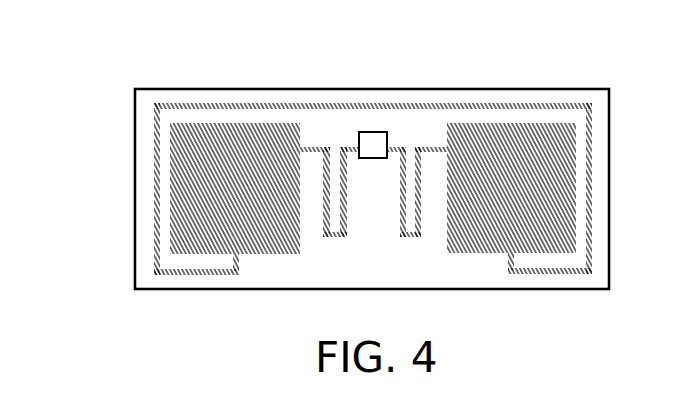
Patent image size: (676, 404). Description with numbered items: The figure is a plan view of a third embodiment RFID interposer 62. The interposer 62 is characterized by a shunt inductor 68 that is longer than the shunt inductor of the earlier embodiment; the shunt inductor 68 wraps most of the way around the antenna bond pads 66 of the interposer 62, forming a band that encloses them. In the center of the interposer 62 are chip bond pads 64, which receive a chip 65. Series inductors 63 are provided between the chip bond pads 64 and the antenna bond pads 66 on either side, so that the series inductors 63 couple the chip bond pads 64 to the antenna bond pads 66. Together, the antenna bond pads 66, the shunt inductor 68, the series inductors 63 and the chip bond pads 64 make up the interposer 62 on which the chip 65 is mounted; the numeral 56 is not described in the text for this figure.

The RFID interposer 62 is at (115, 82).
The shunt inductor 68 is at (533, 105).
The antenna bond pads 66 is at (238, 131).
The second radiating element 56 is at (498, 128).
The series inductors 63 is at (337, 237).
The chip bond pads 64 is at (396, 148).
The chip 65 is at (375, 158).